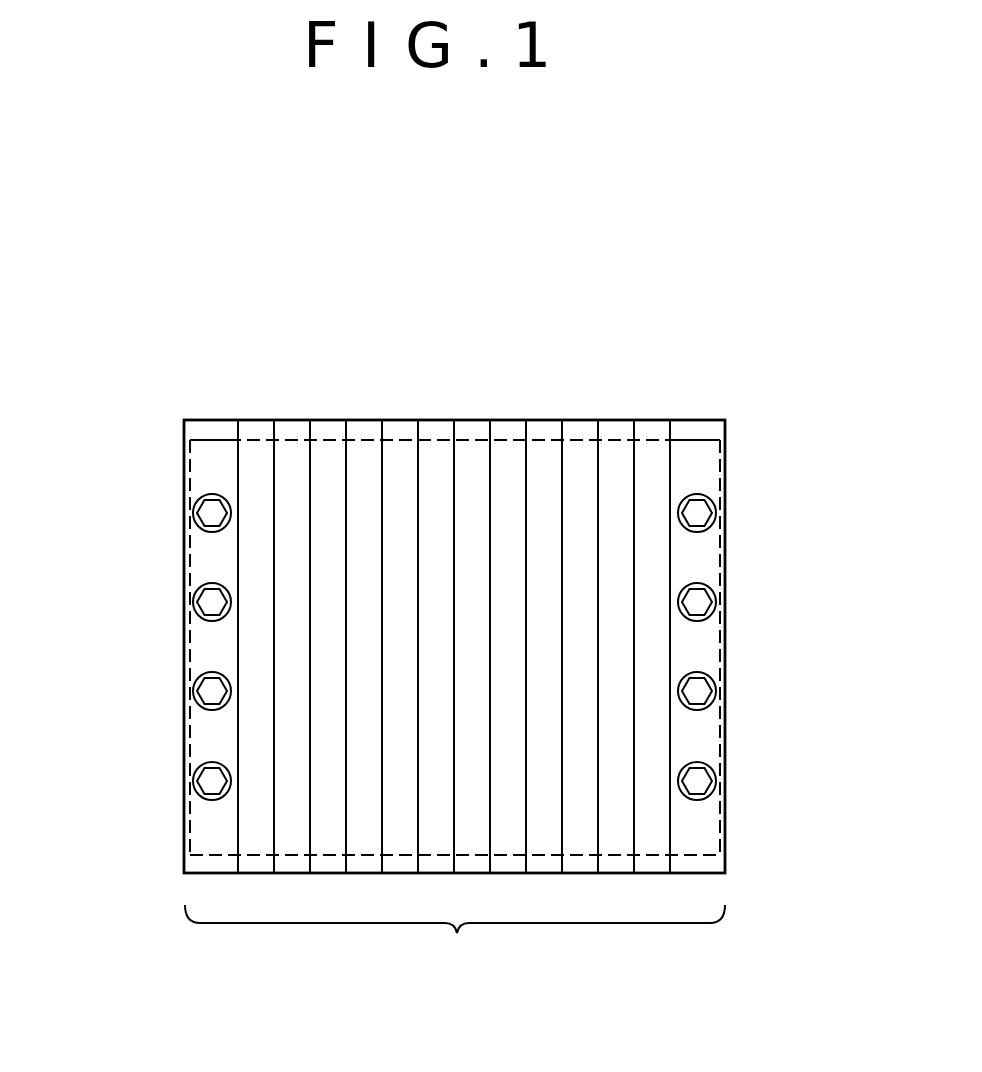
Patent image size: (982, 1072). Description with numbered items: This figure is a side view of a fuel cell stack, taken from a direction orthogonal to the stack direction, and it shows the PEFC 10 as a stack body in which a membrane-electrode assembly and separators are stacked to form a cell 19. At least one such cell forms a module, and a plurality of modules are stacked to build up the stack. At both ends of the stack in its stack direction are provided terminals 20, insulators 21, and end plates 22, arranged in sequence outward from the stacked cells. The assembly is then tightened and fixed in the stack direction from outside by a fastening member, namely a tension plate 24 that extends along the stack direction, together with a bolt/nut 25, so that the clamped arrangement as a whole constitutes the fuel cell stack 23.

The PEFC 10 is at (728, 810).
The cell 19 is at (577, 435).
The terminals 20 is at (292, 434).
The insulators 21 is at (258, 438).
The end plates 22 is at (195, 432).
The fuel cell stack 23 is at (455, 939).
The tension plate 24 is at (220, 438).
The bolt/nut 25 is at (212, 513).